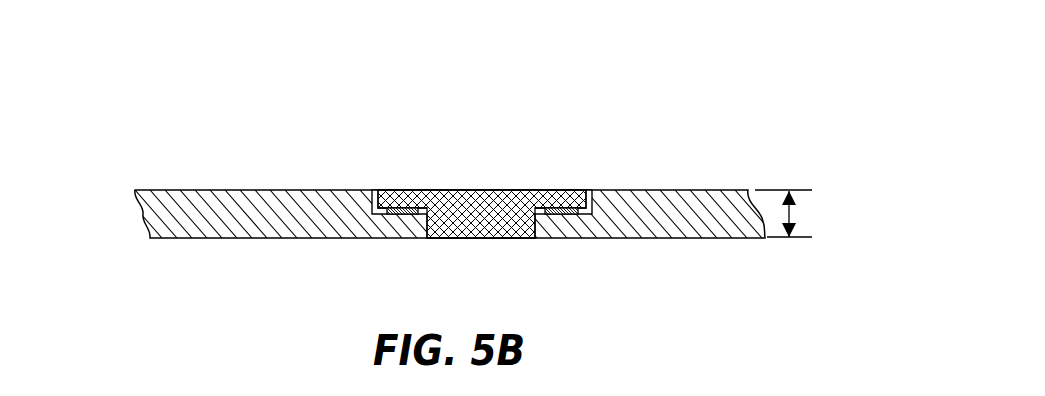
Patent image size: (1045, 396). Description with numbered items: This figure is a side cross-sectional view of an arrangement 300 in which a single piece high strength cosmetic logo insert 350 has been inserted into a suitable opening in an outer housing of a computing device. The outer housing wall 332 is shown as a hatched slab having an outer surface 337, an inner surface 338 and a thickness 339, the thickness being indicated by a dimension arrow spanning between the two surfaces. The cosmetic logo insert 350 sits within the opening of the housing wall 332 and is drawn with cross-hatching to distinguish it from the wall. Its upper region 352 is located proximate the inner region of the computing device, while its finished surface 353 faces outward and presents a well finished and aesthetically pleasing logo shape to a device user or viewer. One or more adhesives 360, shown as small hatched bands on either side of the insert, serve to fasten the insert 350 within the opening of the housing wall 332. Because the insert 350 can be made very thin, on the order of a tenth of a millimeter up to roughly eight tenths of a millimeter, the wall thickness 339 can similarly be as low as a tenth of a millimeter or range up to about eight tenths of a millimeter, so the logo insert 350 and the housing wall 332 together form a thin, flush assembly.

The arrangement 300 is at (710, 96).
The outer housing wall 332 is at (150, 228).
The outer surface 337 is at (242, 250).
The inner surface 338 is at (272, 183).
The thickness 339 is at (790, 217).
The cosmetic logo insert 350 is at (466, 217).
The upper region 352 is at (549, 196).
The finished surface 353 is at (460, 252).
The adhesives 360 is at (572, 216).